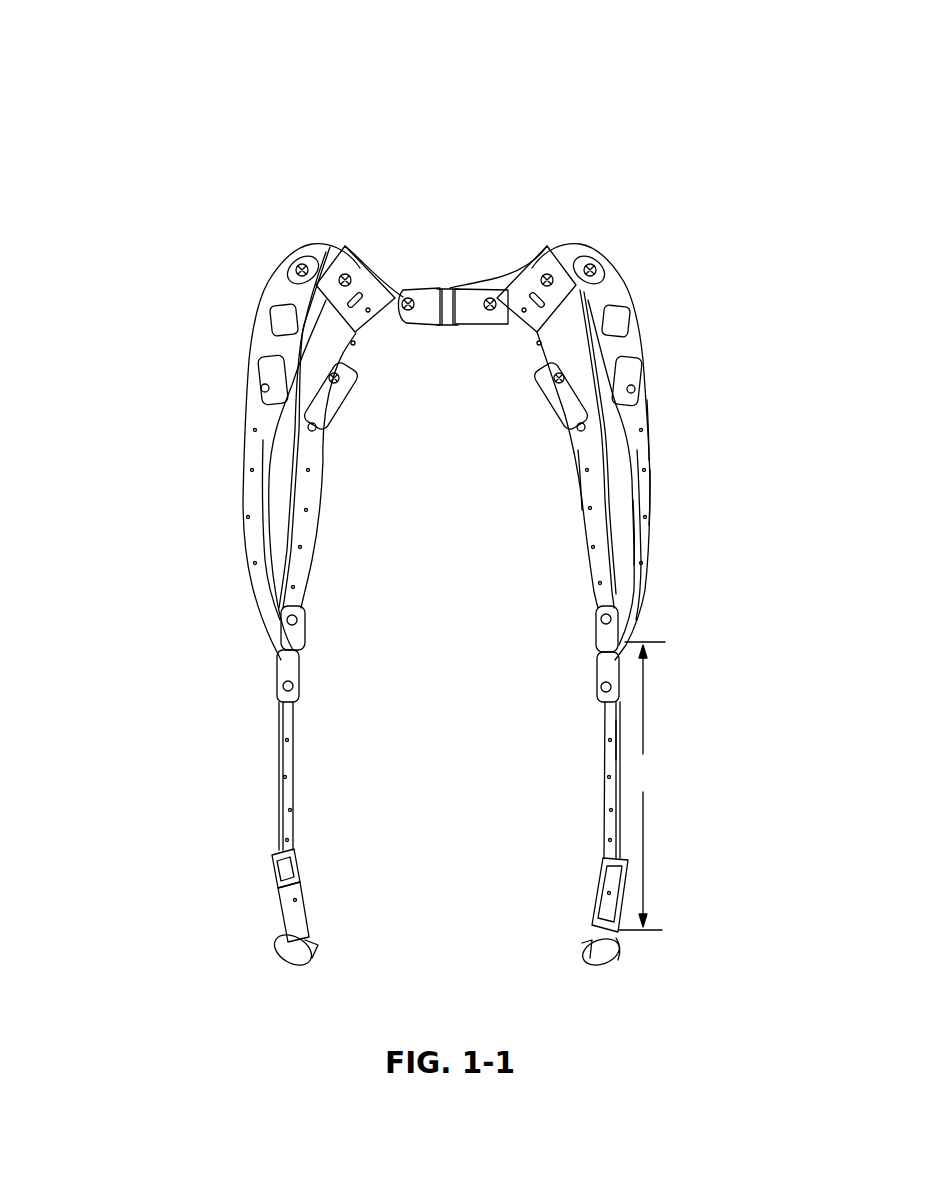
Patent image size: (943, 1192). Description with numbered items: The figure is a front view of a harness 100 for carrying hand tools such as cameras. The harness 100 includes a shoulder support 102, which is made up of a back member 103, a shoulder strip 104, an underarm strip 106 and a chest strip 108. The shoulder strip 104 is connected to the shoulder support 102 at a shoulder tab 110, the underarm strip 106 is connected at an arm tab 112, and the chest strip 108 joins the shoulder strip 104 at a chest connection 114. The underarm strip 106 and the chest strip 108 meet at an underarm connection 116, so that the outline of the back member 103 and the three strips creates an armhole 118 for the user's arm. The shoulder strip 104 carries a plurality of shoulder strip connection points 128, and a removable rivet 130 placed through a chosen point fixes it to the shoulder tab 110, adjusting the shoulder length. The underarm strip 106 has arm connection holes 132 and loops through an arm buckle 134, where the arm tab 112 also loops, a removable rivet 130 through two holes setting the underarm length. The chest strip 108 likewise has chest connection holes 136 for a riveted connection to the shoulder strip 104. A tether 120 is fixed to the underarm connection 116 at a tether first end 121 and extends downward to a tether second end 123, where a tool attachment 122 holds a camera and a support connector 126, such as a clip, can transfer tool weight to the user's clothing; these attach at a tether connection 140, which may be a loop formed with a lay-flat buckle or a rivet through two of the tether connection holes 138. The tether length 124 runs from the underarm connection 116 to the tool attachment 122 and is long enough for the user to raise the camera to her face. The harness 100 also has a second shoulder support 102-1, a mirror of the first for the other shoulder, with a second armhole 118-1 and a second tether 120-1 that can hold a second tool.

The harness 100 is at (662, 127).
The shoulder support 102 is at (500, 268).
The second shoulder support 102-1 is at (255, 283).
The back member 103 is at (543, 298).
The shoulder strip 104 is at (612, 290).
The underarm strip 106 is at (582, 530).
The chest strip 108 is at (650, 487).
The shoulder tab 110 is at (584, 252).
The arm tab 112 is at (547, 341).
The chest connection 114 is at (641, 362).
The underarm connection 116 is at (627, 641).
The armhole 118 is at (632, 532).
The second armhole 118-1 is at (285, 455).
The tether 120 is at (603, 786).
The second tether 120-1 is at (280, 723).
The tether first end 121 is at (596, 641).
The tool attachment 122 is at (582, 941).
The tether second end 123 is at (640, 945).
The tether length 124 is at (644, 786).
The support connector 126 is at (608, 966).
The shoulder strip connection points 128 is at (526, 293).
The removable rivet 130 is at (551, 275).
The arm connection holes 132 is at (584, 470).
The arm buckle 134 is at (580, 399).
The chest connection holes 136 is at (648, 428).
The tether connection holes 138 is at (612, 739).
The tether connection 140 is at (592, 900).